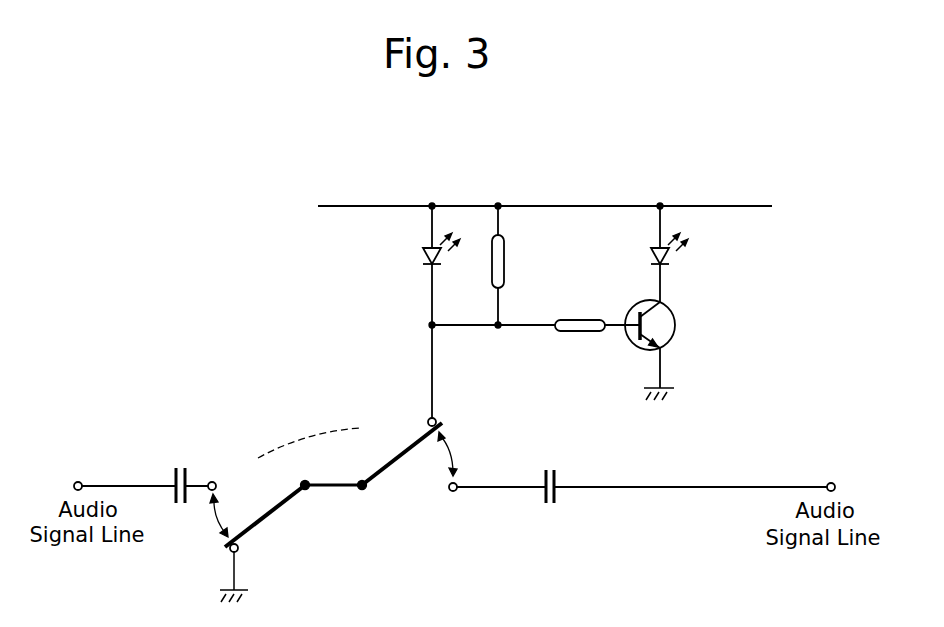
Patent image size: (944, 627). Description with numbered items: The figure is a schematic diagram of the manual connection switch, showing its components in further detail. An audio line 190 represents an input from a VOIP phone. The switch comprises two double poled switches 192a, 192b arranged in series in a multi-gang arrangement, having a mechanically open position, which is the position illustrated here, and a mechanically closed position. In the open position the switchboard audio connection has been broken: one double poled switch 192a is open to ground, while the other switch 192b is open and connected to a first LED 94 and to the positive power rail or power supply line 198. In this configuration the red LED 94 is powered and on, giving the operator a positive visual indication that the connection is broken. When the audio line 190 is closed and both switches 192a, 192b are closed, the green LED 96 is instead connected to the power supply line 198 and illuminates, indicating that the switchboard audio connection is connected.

The power supply line 198 is at (572, 205).
The first LED 94 is at (423, 256).
The LED 96 is at (651, 256).
The audio line 190 is at (108, 484).
The double poled switch 192a is at (267, 491).
The double poled switch 192b is at (373, 462).